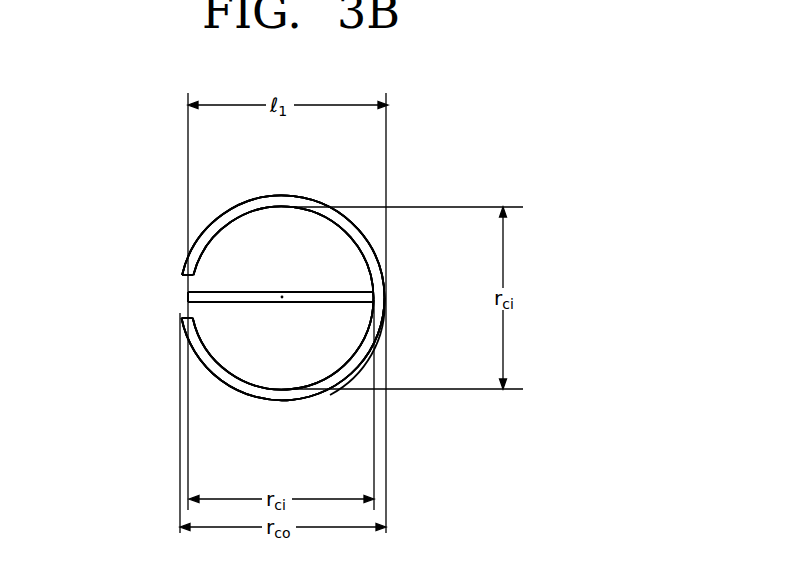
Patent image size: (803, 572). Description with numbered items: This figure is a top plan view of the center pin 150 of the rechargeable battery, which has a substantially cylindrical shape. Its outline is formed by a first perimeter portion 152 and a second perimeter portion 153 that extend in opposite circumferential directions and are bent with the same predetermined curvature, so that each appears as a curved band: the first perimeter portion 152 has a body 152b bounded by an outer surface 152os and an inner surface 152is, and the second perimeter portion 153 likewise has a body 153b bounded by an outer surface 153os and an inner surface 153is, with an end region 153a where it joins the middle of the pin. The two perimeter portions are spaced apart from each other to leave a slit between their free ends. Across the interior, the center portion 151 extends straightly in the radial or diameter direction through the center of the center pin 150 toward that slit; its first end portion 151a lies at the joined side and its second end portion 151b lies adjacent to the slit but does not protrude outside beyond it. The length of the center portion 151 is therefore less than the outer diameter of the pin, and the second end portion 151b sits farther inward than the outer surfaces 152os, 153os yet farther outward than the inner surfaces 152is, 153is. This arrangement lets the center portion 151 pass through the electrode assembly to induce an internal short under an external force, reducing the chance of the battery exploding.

The center pin 150 is at (505, 168).
The center portion 151 is at (322, 297).
The first end portion of the center portion 151a is at (358, 298).
The second end portion of the center portion 151b is at (190, 297).
The first perimeter portion 152 is at (283, 197).
The first perimeter portion body 152b is at (200, 250).
The inner surface of the first perimeter portion 152is is at (200, 258).
The outer surface of the first perimeter portion 152os is at (186, 256).
The second perimeter portion 153 is at (282, 401).
The second perimeter portion end 153a is at (374, 323).
The second perimeter portion body 153b is at (195, 352).
The inner surface of the second perimeter portion 153is is at (200, 335).
The outer surface of the second perimeter portion 153os is at (189, 343).